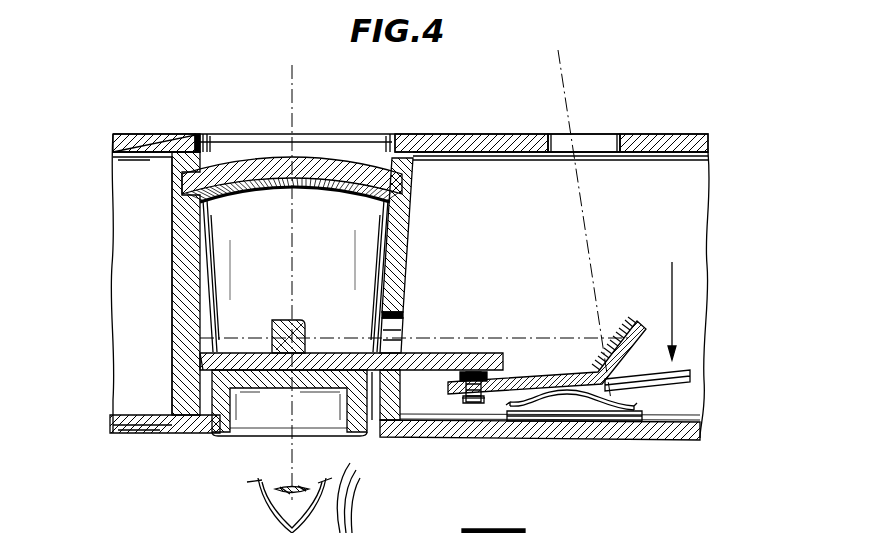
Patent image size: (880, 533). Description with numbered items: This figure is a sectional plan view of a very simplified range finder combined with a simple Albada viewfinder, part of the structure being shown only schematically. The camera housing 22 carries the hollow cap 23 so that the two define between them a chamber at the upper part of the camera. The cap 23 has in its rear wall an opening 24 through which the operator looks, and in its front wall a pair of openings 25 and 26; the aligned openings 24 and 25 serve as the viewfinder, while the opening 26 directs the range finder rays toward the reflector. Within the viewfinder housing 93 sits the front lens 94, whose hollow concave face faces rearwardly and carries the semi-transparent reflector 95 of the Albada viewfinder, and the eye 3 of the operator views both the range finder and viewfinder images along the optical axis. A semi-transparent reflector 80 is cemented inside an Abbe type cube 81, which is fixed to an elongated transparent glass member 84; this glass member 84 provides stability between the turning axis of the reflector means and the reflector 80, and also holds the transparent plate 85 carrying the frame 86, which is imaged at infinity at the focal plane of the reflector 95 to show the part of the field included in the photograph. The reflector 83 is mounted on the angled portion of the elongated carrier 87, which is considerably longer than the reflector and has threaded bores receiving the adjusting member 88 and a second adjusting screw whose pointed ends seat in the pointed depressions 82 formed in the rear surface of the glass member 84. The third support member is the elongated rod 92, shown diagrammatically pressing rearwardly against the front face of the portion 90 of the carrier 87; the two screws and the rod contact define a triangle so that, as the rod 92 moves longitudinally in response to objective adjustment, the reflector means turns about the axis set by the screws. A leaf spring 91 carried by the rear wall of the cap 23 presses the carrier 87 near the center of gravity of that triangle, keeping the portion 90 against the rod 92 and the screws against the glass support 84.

The eye 3 is at (266, 509).
The camera housing 22 is at (712, 272).
The hollow cap 23 is at (712, 152).
The opening 24 is at (328, 416).
The opening 25 is at (368, 140).
The opening 26 is at (612, 148).
The semi-transparent reflector 80 is at (307, 332).
The Abbe type cube 81 is at (292, 269).
The pointed depressions 82 is at (462, 378).
The reflector 83 is at (630, 318).
The elongated transparent glass member 84 is at (240, 356).
The transparent plate 85 is at (276, 392).
The frame 86 is at (237, 360).
The elongated carrier 87 is at (540, 384).
The adjusting member 88 is at (476, 403).
The portion 90 is at (692, 376).
The leaf spring 91 is at (596, 421).
The elongated rod 92 is at (672, 322).
The viewfinder housing 93 is at (406, 258).
The front lens 94 is at (278, 152).
The semi-transparent reflector 95 is at (318, 152).